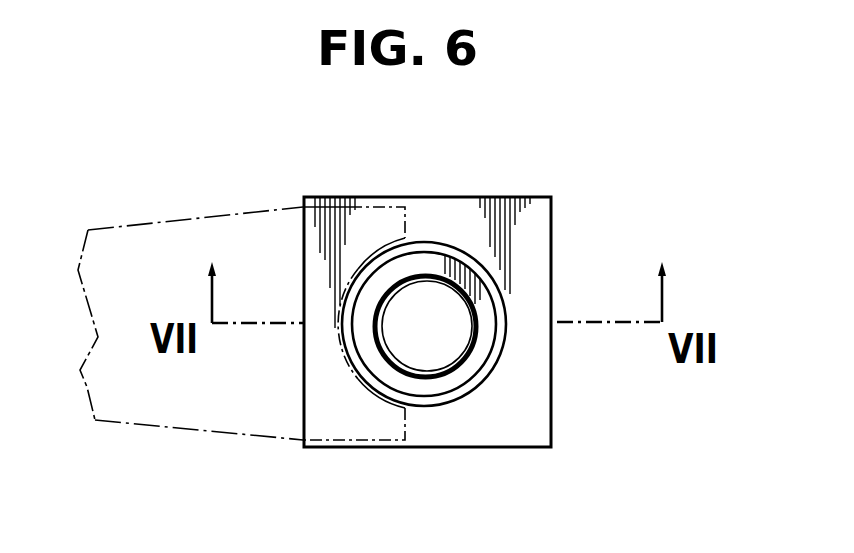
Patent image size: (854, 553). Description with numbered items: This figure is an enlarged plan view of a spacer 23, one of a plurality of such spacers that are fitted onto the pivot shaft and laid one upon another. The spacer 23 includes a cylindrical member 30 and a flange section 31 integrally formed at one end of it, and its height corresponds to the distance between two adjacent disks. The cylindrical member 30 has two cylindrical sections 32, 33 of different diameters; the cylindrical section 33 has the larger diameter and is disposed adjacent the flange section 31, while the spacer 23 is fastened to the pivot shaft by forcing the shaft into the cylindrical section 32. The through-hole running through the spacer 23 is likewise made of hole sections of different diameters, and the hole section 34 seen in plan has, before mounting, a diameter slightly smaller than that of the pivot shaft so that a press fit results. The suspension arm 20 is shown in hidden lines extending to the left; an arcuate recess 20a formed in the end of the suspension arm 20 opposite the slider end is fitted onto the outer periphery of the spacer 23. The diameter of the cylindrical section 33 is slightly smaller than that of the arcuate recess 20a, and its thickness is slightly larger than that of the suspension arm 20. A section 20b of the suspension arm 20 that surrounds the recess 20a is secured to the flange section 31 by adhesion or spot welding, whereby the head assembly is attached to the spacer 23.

The suspension arm 20 is at (183, 218).
The arcuate recess 20a is at (390, 392).
The section of the suspension arm surrounding the recess 20b is at (383, 422).
The spacer 23 is at (486, 190).
The cylindrical member 30 is at (490, 263).
The flange section 31 is at (518, 197).
The cylindrical section 32 is at (503, 300).
The cylindrical section 33 is at (473, 380).
The hole section 34 is at (394, 283).